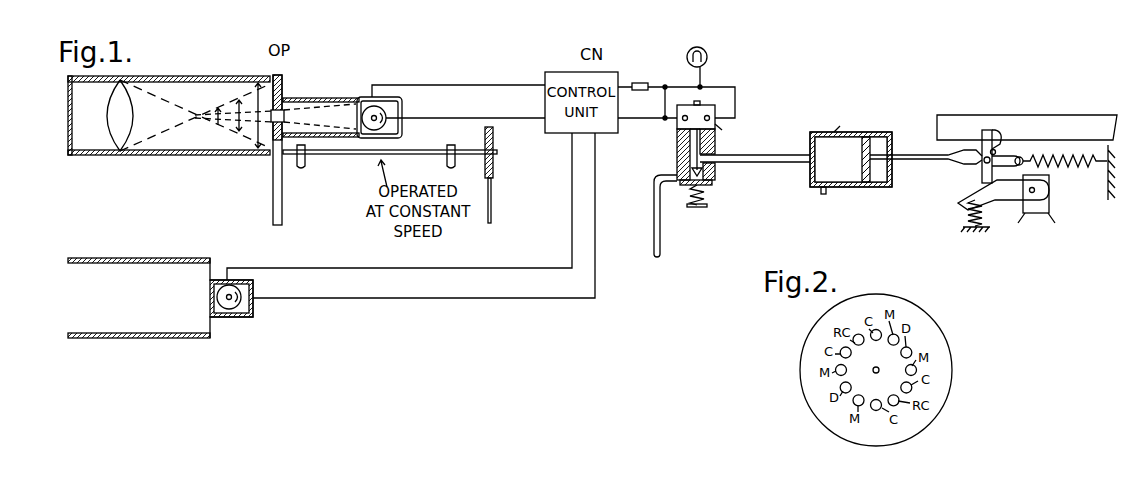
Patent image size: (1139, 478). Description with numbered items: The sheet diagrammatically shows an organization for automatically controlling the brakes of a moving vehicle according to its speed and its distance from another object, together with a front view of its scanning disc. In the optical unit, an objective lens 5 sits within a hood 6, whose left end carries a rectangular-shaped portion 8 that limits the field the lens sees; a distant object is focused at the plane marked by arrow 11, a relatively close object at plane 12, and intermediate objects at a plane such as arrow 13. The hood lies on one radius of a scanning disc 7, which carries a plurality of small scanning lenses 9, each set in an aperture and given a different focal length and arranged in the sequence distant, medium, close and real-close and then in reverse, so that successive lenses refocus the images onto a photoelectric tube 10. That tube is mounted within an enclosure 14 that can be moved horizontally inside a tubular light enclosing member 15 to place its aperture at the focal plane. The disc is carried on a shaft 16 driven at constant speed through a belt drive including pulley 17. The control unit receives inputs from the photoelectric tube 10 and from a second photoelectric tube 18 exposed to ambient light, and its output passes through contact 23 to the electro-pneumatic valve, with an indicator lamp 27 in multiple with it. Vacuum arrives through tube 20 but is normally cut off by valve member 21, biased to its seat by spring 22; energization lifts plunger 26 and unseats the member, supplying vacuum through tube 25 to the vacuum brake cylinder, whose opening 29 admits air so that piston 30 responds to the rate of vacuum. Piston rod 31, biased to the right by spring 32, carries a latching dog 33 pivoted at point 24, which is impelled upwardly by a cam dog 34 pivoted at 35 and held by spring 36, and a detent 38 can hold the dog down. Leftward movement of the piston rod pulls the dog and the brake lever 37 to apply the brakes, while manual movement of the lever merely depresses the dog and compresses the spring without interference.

In FIG. 1, the objective lens 5 is at (108, 122).
In FIG. 1, the hood 6 is at (172, 77).
In FIG. 1, the scanning disc 7 is at (283, 208).
In FIG. 2, the scanning disc 7 is at (952, 365).
In FIG. 1, the rectangular-shaped portion 8 is at (72, 156).
In FIG. 1, the scanning lens 9 is at (281, 112).
In FIG. 2, the scanning lens 9 is at (912, 351).
In FIG. 1, the photoelectric tube 10 is at (376, 108).
In FIG. 1, the arrow indicating image plane of distant object 11 is at (217, 120).
In FIG. 1, the image plane of close object 12 is at (258, 140).
In FIG. 1, the arrow indicating intermediate image plane 13 is at (238, 128).
In FIG. 1, the enclosure 14 is at (398, 116).
In FIG. 1, the tubular light enclosing member 15 is at (331, 98).
In FIG. 1, the shaft 16 is at (344, 153).
In FIG. 1, the pulley 17 is at (492, 180).
In FIG. 1, the photoelectric tube 18 is at (240, 287).
In FIG. 1, the tube 20 is at (654, 238).
In FIG. 1, the valve member 21 is at (710, 178).
In FIG. 1, the spring 22 is at (706, 196).
In FIG. 1, the contact 23 is at (640, 83).
In FIG. 1, the pivot point 24 is at (1023, 159).
In FIG. 1, the tube 25 is at (762, 160).
In FIG. 1, the plunger 26 is at (699, 208).
In FIG. 1, the indicator lamp 27 is at (707, 55).
In FIG. 1, the opening 29 is at (822, 192).
In FIG. 1, the piston 30 is at (864, 172).
In FIG. 1, the piston rod 31 is at (924, 160).
In FIG. 1, the spring 32 is at (1078, 167).
In FIG. 1, the latching dog 33 is at (982, 176).
In FIG. 1, the cam dog 34 is at (966, 200).
In FIG. 1, the pivot 35 is at (1035, 192).
In FIG. 1, the spring 36 is at (985, 222).
In FIG. 1, the lever 37 is at (1050, 115).
In FIG. 1, the detent 38 is at (984, 159).